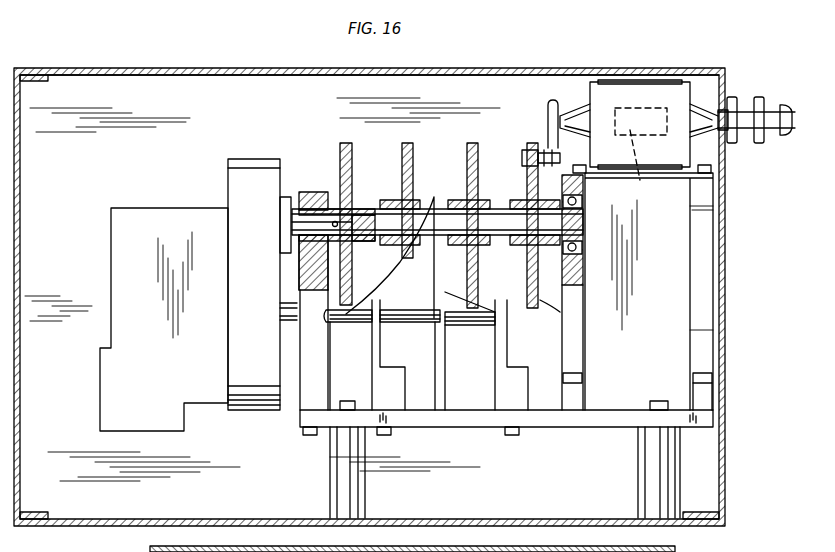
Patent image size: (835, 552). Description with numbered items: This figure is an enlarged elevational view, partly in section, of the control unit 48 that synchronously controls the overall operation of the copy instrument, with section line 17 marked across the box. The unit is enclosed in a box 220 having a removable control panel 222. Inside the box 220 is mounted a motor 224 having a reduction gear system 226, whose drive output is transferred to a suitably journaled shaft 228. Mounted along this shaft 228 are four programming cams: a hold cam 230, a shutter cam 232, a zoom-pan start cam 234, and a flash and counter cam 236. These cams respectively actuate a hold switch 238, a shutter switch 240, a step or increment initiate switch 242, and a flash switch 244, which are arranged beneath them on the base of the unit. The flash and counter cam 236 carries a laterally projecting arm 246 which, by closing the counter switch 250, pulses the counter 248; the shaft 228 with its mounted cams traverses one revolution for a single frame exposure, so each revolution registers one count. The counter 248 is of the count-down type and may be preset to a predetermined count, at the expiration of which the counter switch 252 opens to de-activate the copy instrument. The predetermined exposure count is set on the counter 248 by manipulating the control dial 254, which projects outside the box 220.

The control unit 48 is at (76, 66).
The section line 17- 17 is at (290, 48).
The box 220 is at (726, 468).
The removable control panel 222 is at (199, 77).
The motor 224 is at (176, 194).
The reduction gear system 226 is at (262, 156).
The shaft 228 is at (451, 210).
The hold cam 230 is at (347, 140).
The shutter cam 232 is at (410, 140).
The zoom-pan start cam 234 is at (470, 143).
The flash and counter cam 236 is at (527, 186).
The hold switch 238 is at (348, 323).
The shutter switch 240 is at (425, 323).
The step or increment initiate switch 242 is at (486, 326).
The flash switch 244 is at (560, 334).
The laterally projecting arm 246 is at (546, 153).
The counter 248 is at (642, 63).
The counter switch 250 is at (584, 106).
The counter switch 252 is at (642, 157).
The control dial 254 is at (764, 118).